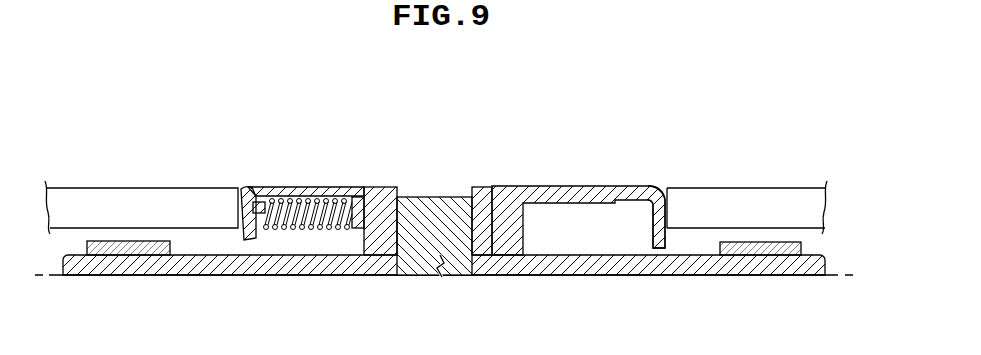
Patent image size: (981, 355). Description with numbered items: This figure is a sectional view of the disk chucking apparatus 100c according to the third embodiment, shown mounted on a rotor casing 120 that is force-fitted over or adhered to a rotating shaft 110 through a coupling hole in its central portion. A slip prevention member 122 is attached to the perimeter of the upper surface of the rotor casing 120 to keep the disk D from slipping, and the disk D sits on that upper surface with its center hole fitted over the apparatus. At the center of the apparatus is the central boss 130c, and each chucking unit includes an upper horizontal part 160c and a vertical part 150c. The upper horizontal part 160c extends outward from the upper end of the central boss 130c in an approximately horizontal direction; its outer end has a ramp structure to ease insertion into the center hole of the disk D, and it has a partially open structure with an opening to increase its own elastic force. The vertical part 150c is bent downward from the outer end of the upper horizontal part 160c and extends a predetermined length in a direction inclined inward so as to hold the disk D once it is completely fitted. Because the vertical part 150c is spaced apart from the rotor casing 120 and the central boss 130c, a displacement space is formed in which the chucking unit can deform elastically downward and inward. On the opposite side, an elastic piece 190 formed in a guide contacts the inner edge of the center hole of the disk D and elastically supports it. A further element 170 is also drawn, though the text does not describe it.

The disk chucking apparatus 100c is at (190, 88).
The rotating shaft 110 is at (450, 196).
The rotor casing 120 is at (238, 265).
The slip prevention member 122 is at (130, 250).
The central boss 130c is at (380, 197).
The vertical part 150c is at (237, 208).
The upper horizontal part 160c is at (290, 195).
The support member 170 is at (351, 196).
The elastic piece 190 is at (660, 191).
The disk D is at (113, 207).